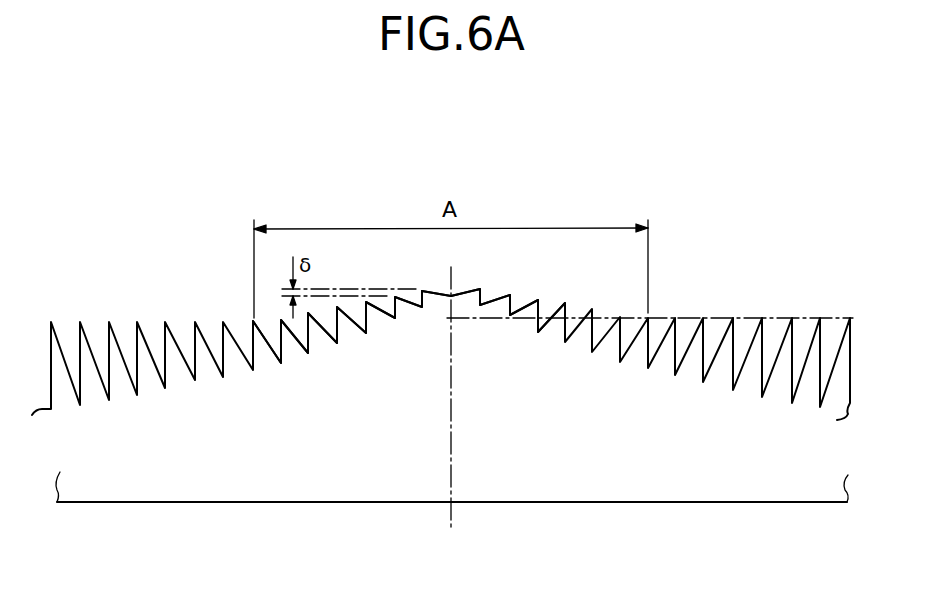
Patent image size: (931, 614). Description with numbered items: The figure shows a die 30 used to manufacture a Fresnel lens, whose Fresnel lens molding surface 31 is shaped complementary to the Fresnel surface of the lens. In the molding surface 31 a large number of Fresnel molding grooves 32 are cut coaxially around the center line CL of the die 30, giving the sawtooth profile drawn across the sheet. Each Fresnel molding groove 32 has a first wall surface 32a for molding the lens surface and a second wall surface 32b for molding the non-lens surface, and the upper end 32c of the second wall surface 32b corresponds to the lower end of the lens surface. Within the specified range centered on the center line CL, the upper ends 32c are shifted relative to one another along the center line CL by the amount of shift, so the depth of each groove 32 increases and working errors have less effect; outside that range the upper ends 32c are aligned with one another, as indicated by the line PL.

The die 30 is at (233, 488).
The Fresnel lens molding surface 31 is at (669, 288).
The Fresnel molding groove 32 is at (418, 299).
The first wall surface 32a is at (524, 306).
The second wall surface 32b is at (510, 295).
The upper end 32c is at (538, 300).
The parting line PL is at (749, 318).
The center line CL is at (451, 482).